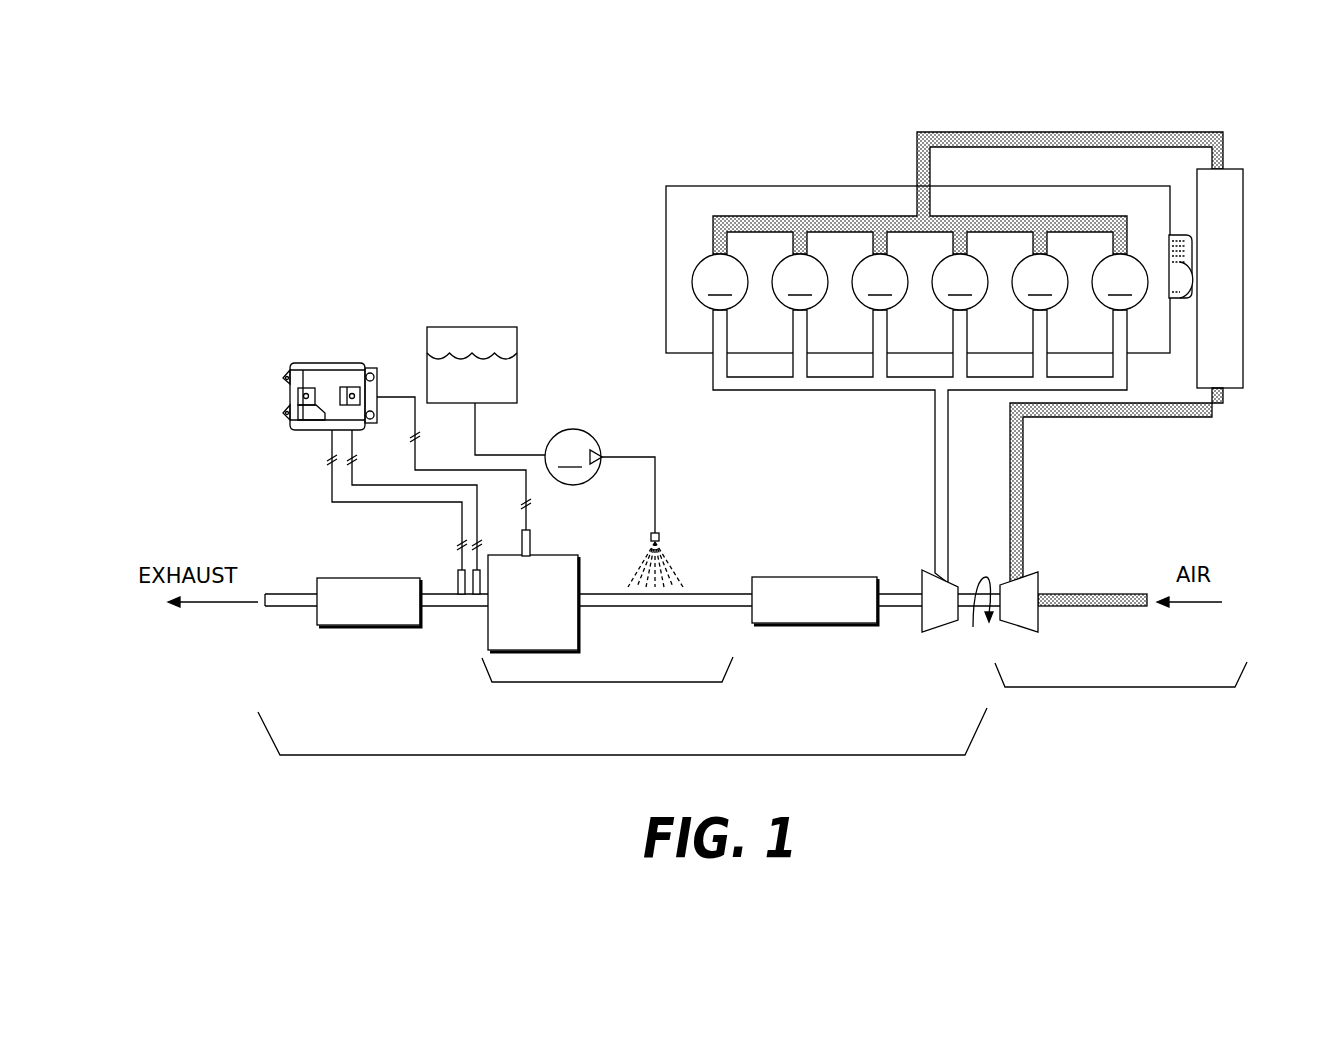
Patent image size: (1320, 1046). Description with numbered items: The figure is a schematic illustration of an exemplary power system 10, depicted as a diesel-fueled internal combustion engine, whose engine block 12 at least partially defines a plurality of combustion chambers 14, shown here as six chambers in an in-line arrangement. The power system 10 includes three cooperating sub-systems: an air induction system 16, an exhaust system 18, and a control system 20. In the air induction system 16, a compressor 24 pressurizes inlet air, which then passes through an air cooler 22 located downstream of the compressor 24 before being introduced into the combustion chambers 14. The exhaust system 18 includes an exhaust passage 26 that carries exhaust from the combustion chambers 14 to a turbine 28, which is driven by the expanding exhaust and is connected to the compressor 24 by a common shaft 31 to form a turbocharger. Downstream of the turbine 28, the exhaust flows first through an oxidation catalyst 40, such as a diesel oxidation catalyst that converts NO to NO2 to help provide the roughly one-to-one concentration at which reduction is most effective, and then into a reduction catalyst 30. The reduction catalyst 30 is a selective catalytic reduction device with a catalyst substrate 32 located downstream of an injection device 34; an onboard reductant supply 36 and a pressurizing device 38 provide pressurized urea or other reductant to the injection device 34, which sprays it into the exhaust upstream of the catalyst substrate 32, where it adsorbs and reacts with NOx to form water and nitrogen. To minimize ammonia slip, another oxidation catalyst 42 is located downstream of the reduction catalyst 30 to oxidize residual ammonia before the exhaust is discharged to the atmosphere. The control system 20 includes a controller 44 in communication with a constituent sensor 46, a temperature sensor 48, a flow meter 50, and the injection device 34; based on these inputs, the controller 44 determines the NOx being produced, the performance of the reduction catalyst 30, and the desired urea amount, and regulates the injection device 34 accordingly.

The power system 10 is at (225, 128).
The engine block 12 is at (728, 186).
The combustion chambers 14 is at (920, 282).
The air induction system 16 is at (1138, 688).
The exhaust system 18 is at (510, 757).
The control system 20 is at (162, 425).
The air cooler 22 is at (1230, 292).
The compressor 24 is at (1040, 577).
The exhaust passage 26 is at (936, 484).
The turbine 28 is at (938, 629).
The common shaft 31 is at (967, 592).
The reduction catalyst 30 is at (627, 683).
The catalyst substrate 32 is at (547, 555).
The injection device 34 is at (660, 533).
The reductant supply 36 is at (518, 383).
The pressurizing device 38 is at (573, 457).
The oxidation catalyst 40 is at (876, 577).
The oxidation catalyst 42 is at (357, 578).
The controller 44 is at (330, 363).
The constituent sensor 46 is at (457, 582).
The temperature sensor 48 is at (532, 548).
The flow meter 50 is at (478, 570).